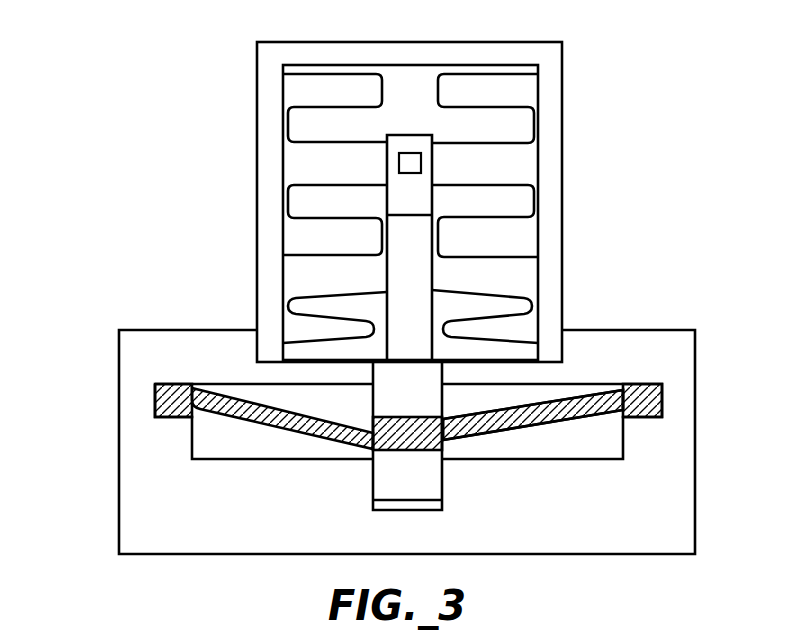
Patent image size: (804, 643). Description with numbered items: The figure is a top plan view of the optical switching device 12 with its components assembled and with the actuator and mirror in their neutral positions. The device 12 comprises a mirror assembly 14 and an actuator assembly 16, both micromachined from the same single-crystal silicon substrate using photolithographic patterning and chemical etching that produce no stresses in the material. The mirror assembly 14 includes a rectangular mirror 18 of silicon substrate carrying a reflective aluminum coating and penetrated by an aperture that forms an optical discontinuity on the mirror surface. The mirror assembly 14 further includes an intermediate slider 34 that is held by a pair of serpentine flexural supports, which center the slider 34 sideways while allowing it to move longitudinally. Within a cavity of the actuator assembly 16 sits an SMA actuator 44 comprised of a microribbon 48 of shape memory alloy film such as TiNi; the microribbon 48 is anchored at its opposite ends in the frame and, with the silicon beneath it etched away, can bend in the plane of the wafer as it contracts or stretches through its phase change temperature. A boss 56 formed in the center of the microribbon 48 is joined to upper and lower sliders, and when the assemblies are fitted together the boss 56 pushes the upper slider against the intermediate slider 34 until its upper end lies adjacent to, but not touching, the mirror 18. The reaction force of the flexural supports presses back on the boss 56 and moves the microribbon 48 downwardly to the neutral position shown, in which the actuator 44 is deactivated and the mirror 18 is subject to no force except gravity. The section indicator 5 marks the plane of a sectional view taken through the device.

The optical switching device 12 is at (617, 108).
The mirror assembly 14 is at (252, 182).
The rectangular mirror 18 is at (422, 133).
The intermediate slider 34 is at (413, 295).
The section line 5- 5 is at (410, 135).
The actuator assembly 16 is at (115, 410).
The SMA actuator 44 is at (594, 420).
The microribbon 48 is at (533, 425).
The boss 56 is at (420, 452).